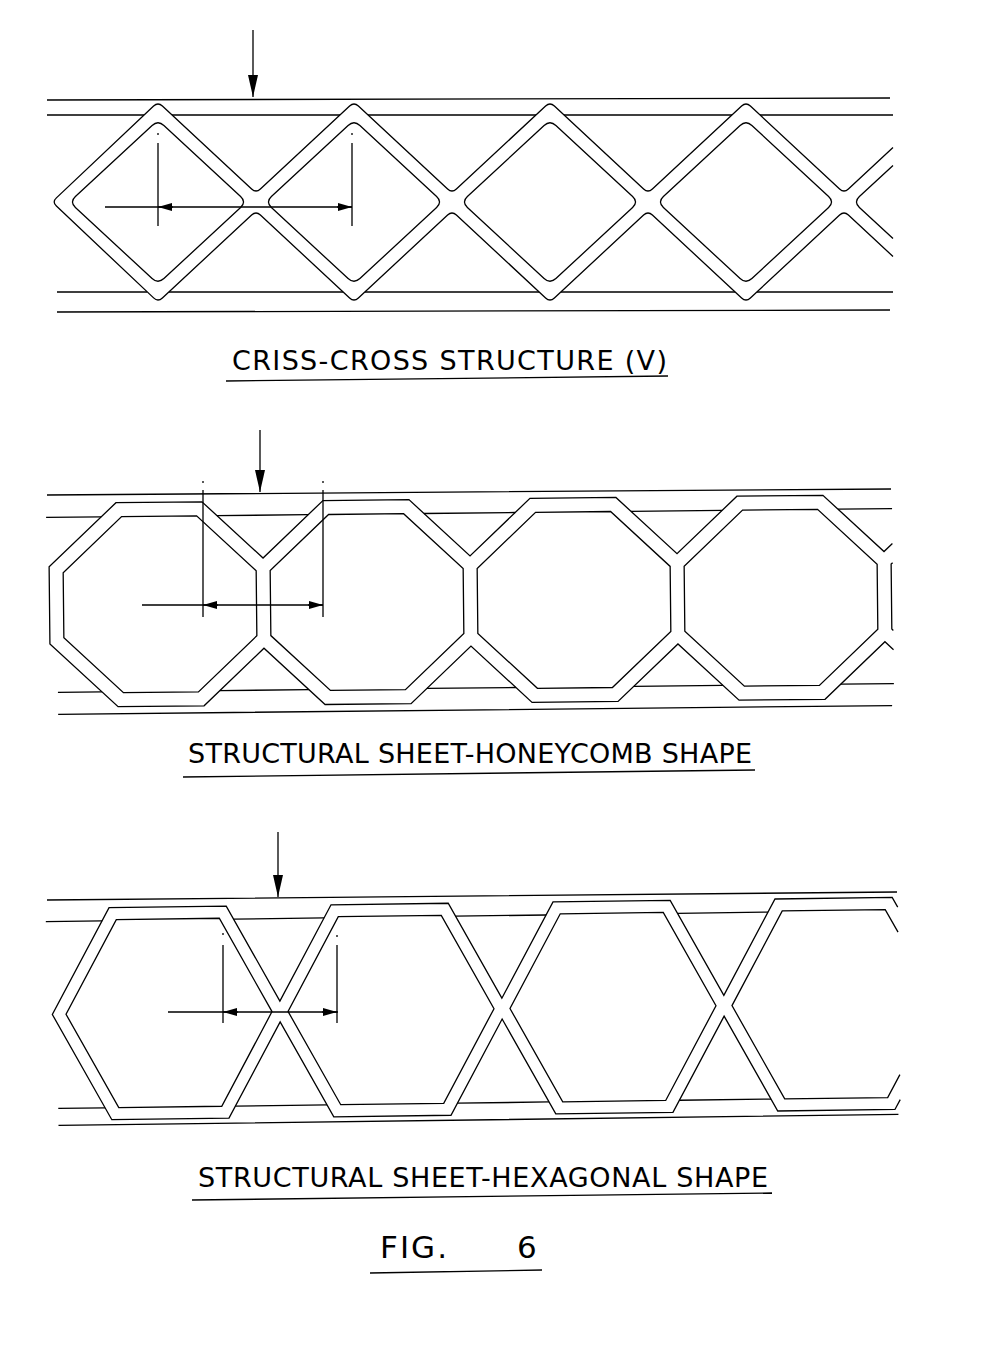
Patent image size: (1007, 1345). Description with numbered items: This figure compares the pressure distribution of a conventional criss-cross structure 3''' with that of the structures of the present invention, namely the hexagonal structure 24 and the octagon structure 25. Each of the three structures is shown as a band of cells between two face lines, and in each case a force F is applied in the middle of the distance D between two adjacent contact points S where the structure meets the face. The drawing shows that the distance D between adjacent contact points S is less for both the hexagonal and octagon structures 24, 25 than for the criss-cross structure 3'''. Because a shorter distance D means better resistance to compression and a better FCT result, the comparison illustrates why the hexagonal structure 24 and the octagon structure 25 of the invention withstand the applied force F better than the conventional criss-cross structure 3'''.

The contact point S is at (157, 100).
The force F is at (265, 448).
The distance D is at (228, 578).
The criss-cross structure 3''' is at (470, 208).
The octagon structure 25 is at (288, 548).
The hexagonal structure 24 is at (307, 965).